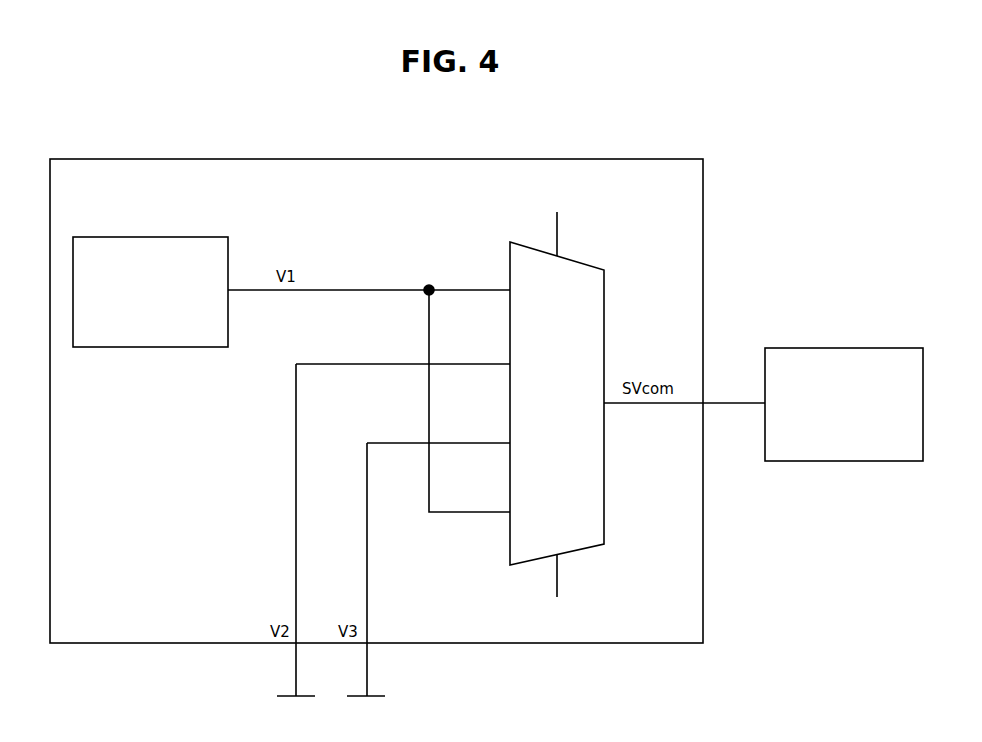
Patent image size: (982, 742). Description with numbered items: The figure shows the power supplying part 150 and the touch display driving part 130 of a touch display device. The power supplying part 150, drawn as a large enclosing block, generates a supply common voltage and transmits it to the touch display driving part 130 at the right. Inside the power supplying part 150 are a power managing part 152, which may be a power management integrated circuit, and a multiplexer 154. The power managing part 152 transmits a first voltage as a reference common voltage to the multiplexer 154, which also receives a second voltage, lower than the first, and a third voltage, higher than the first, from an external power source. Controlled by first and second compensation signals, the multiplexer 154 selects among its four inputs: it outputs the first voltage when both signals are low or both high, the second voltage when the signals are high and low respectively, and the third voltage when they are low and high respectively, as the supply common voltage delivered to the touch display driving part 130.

The power supplying part 150 is at (410, 159).
The power managing part 152 is at (153, 237).
The multiplexer 154 is at (604, 298).
The touch display driving part 130 is at (851, 348).